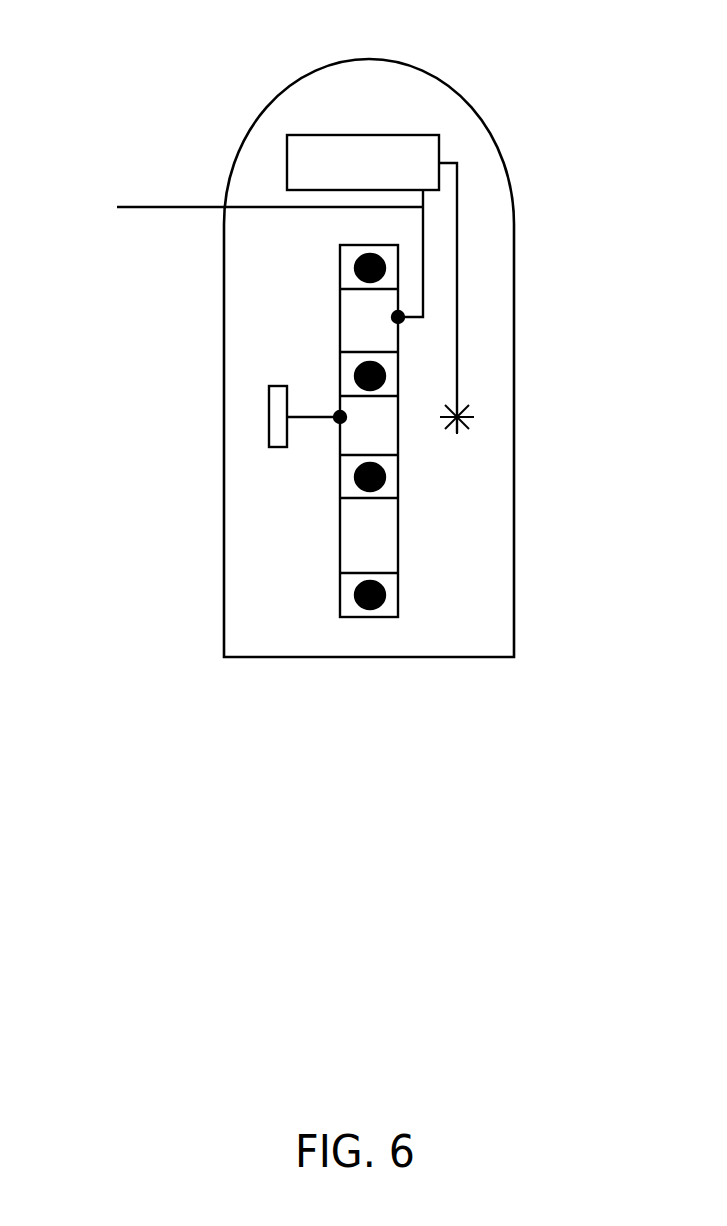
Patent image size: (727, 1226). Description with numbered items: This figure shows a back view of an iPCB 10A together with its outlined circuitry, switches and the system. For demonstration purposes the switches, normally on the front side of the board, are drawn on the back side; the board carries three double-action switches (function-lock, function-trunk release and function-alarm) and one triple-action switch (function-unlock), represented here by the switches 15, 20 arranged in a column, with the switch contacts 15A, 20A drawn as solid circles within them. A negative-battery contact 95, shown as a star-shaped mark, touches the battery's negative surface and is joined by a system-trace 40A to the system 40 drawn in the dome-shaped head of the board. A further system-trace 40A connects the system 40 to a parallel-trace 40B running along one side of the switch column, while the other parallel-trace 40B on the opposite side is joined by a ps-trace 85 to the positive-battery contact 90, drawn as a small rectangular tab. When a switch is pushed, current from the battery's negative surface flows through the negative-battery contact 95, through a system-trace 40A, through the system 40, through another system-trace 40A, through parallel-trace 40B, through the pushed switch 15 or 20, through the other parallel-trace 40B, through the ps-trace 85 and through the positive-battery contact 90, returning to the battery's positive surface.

The iPCB 10A is at (272, 103).
The system 40 is at (405, 135).
The system-trace 40A is at (558, 236).
The switch 20 is at (352, 365).
The emitters (circles) 20A is at (352, 377).
The parallel-trace 40B is at (338, 542).
The switch 15 is at (350, 603).
The bottom emitter 15A is at (377, 607).
The positive-battery contact 90 is at (269, 402).
The ps-trace 85 is at (317, 417).
The negative-battery contact 95 is at (467, 420).